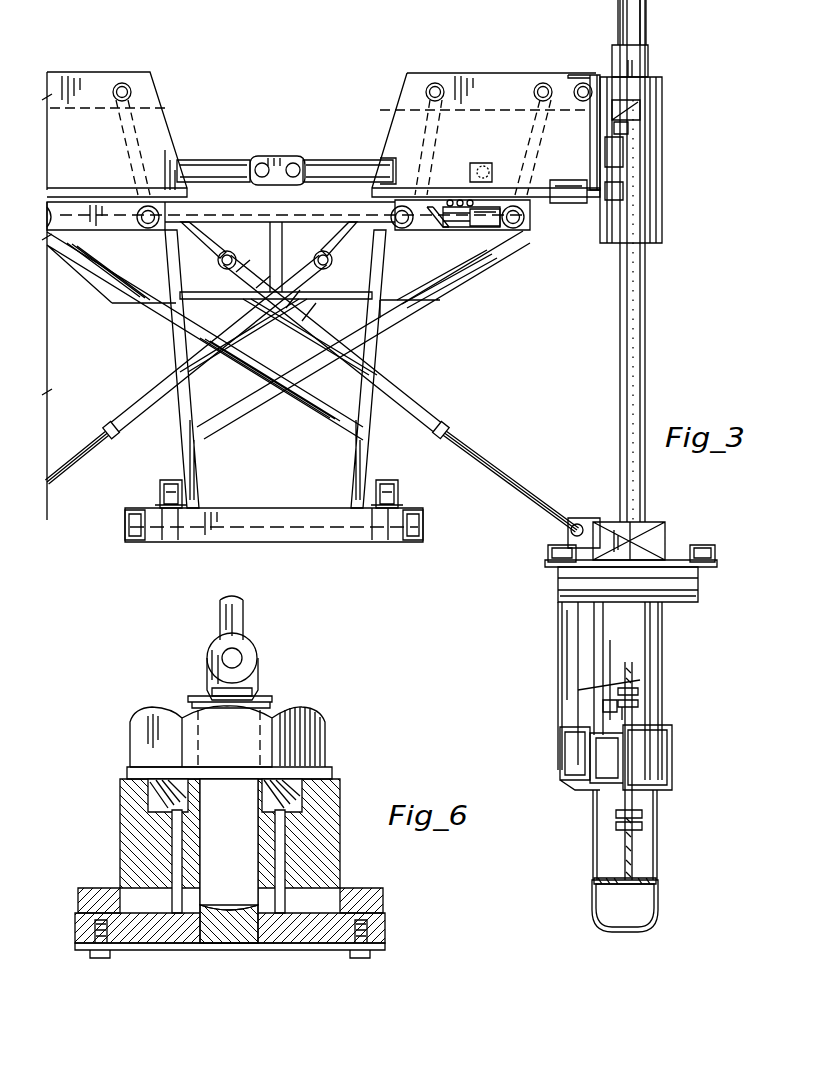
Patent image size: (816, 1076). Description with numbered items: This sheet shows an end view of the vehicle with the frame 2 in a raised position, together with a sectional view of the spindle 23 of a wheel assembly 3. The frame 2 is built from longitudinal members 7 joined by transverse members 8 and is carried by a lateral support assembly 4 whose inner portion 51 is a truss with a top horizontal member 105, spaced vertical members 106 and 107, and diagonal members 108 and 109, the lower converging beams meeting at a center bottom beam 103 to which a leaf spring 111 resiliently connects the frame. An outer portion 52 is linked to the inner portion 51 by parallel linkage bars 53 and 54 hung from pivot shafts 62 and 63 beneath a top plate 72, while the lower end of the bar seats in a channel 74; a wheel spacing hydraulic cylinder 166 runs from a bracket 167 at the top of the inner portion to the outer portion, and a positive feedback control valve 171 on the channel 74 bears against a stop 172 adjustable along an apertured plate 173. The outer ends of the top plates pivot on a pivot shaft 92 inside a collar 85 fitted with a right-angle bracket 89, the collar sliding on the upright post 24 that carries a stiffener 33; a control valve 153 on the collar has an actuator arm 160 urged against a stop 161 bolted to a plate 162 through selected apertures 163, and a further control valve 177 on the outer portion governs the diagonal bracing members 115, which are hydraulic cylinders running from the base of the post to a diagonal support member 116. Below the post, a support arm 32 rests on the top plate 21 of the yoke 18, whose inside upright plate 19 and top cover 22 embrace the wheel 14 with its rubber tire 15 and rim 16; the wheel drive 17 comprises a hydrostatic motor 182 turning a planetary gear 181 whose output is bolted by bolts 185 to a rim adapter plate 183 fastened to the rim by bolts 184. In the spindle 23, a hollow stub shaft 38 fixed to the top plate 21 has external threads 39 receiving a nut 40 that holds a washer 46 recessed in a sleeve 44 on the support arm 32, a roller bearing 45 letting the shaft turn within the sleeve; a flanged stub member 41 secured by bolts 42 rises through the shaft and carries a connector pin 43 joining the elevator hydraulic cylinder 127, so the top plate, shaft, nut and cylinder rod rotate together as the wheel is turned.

In FIG. 3, the frame 2 is at (424, 540).
In FIG. 3, the wheel assembly 3 is at (665, 526).
In FIG. 3, the lateral support assembly 4 is at (228, 154).
In FIG. 3, the longitudinal member 7 is at (125, 522).
In FIG. 3, the transverse member 8 is at (333, 530).
In FIG. 3, the wheel 14 is at (594, 884).
In FIG. 3, the rubber tire 15 is at (658, 896).
In FIG. 3, the rim 16 is at (640, 690).
In FIG. 3, the wheel drive 17 is at (604, 812).
In FIG. 3, the yoke 18 is at (558, 594).
In FIG. 3, the inside upright plate 19 is at (560, 674).
In FIG. 3, the top plate 21 is at (680, 574).
In FIG. 6, the top plate 21 is at (74, 920).
In FIG. 3, the top cover 22 is at (670, 584).
In FIG. 6, the spindle 23 is at (325, 742).
In FIG. 3, the upright post 24 is at (618, 385).
In FIG. 3, the support arm 32 is at (548, 550).
In FIG. 6, the support arm 32 is at (78, 892).
In FIG. 3, the stiffener 33 is at (627, 498).
In FIG. 6, the hollow stub shaft 38 is at (268, 854).
In FIG. 6, the external threads 39 is at (270, 705).
In FIG. 6, the nut 40 is at (130, 734).
In FIG. 6, the flanged stub member 41 is at (256, 690).
In FIG. 6, the bolts 42 is at (88, 950).
In FIG. 6, the connector pin 43 is at (240, 658).
In FIG. 6, the sleeve 44 is at (120, 822).
In FIG. 6, the roller bearing 45 is at (176, 866).
In FIG. 6, the washer 46 is at (325, 774).
In FIG. 3, the inner portion 51 is at (368, 348).
In FIG. 3, the outer portion 52 is at (93, 70).
In FIG. 3, the linkage bar 53 is at (130, 152).
In FIG. 3, the linkage bar 54 is at (520, 126).
In FIG. 3, the pivot shaft 62 is at (436, 84).
In FIG. 3, the pivot shaft 63 is at (546, 84).
In FIG. 3, the top plate 72 is at (424, 82).
In FIG. 3, the channel 74 is at (514, 230).
In FIG. 3, the collar 85 is at (662, 212).
In FIG. 3, the right-angle bracket 89 is at (596, 76).
In FIG. 3, the pivot shaft 92 is at (583, 82).
In FIG. 3, the center bottom beam 103 is at (220, 542).
In FIG. 3, the top horizontal member 105 is at (330, 211).
In FIG. 3, the vertical member 106 is at (186, 352).
In FIG. 3, the vertical member 107 is at (378, 268).
In FIG. 3, the diagonal member 108 is at (112, 264).
In FIG. 3, the diagonal member 109 is at (316, 330).
In FIG. 3, the leaf spring 111 is at (158, 500).
In FIG. 3, the diagonal bracing member 115 is at (120, 420).
In FIG. 3, the diagonal support member 116 is at (210, 242).
In FIG. 6, the elevator hydraulic cylinder 127 is at (218, 616).
In FIG. 3, the positive feedback control valve 153 is at (620, 152).
In FIG. 3, the exterior actuator arm 160 is at (628, 128).
In FIG. 3, the stop 161 is at (640, 105).
In FIG. 3, the plate 162 is at (638, 348).
In FIG. 3, the apertures 163 is at (638, 386).
In FIG. 3, the wheel spacing hydraulic cylinder 166 is at (180, 168).
In FIG. 3, the bracket 167 is at (264, 153).
In FIG. 3, the positive feedback control valve 171 is at (475, 250).
In FIG. 3, the stop 172 is at (432, 232).
In FIG. 3, the plate 173 is at (472, 228).
In FIG. 3, the positive feedback control valve 177 is at (574, 204).
In FIG. 3, the planetary gear 181 is at (660, 727).
In FIG. 3, the hydrostatic motor 182 is at (560, 752).
In FIG. 3, the rim adapter plate 183 is at (640, 694).
In FIG. 3, the bolts 184 is at (578, 692).
In FIG. 3, the bolts 185 is at (603, 706).